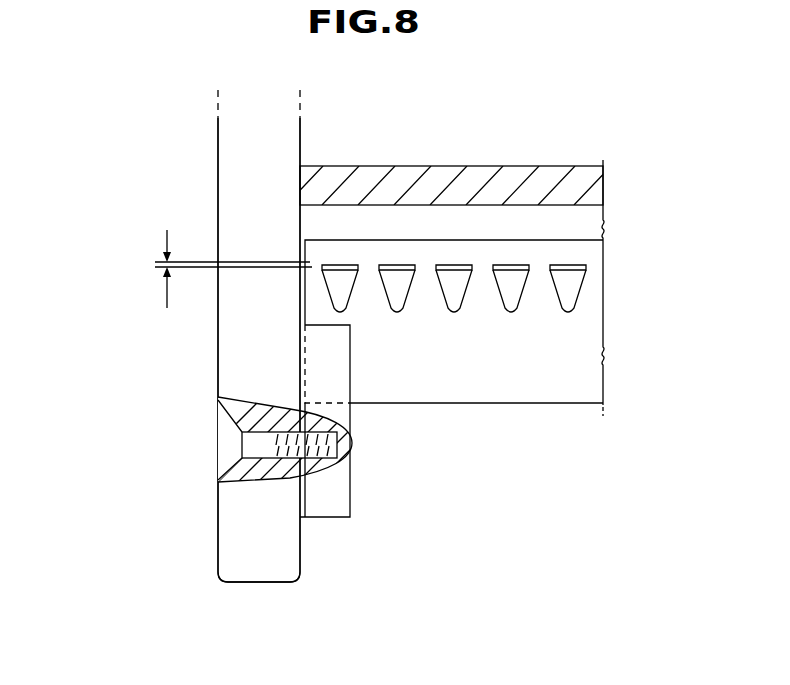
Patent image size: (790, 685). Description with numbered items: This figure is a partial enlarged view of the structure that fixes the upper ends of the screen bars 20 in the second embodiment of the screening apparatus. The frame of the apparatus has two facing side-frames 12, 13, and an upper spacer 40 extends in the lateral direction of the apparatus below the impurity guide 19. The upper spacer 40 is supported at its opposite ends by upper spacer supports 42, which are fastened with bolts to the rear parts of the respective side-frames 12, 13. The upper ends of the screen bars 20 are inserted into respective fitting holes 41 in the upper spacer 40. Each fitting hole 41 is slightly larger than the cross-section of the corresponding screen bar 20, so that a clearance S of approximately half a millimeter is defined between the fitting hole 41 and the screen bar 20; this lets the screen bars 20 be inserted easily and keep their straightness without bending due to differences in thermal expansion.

The side-frame 12 is at (232, 524).
The side-frame 13 is at (259, 350).
The impurity guide 19 is at (445, 177).
The screen bar 20 is at (573, 287).
The upper spacer 40 is at (544, 390).
The fitting hole 41 is at (573, 265).
The upper spacer support 42 is at (337, 492).
The clearance S is at (225, 269).